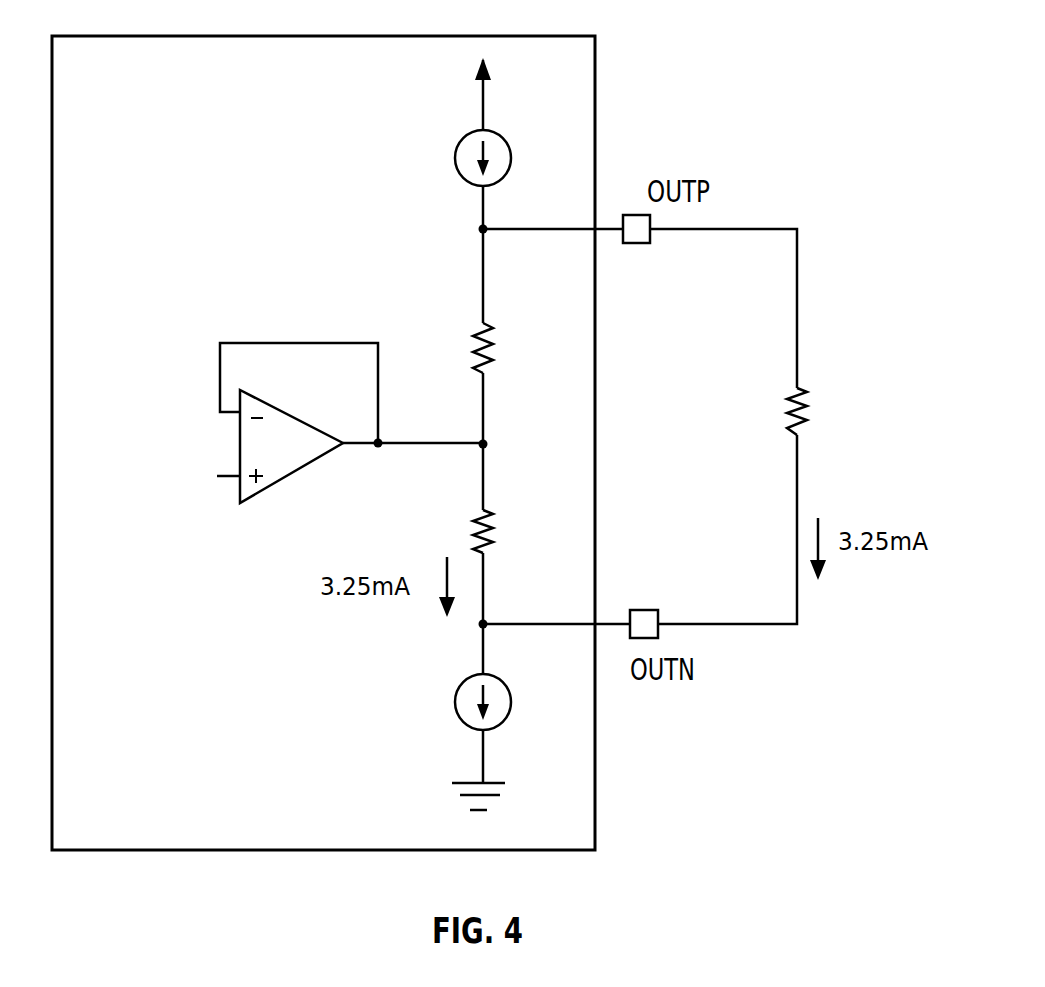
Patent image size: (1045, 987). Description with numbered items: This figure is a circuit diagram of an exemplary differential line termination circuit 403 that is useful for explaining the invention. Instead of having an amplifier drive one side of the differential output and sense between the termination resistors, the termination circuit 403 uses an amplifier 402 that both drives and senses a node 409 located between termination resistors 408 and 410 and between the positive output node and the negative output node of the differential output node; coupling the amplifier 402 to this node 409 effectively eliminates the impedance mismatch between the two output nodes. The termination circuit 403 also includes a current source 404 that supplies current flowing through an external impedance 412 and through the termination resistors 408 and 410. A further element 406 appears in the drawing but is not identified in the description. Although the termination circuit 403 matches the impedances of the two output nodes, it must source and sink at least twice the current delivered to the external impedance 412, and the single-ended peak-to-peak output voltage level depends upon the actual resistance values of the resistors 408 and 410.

The amplifier 402 is at (285, 480).
The termination circuit 403 is at (182, 36).
The current source 404 is at (462, 138).
The current source 406 is at (458, 683).
The termination resistor 408 is at (479, 337).
The node 409 is at (486, 447).
The termination resistor 410 is at (479, 521).
The external impedance 412 is at (792, 400).